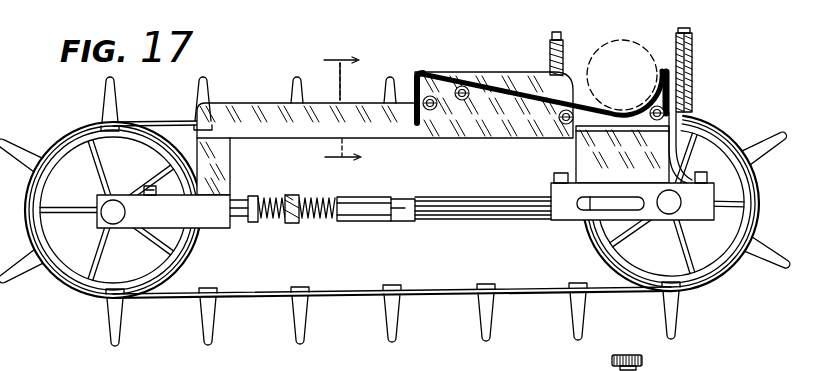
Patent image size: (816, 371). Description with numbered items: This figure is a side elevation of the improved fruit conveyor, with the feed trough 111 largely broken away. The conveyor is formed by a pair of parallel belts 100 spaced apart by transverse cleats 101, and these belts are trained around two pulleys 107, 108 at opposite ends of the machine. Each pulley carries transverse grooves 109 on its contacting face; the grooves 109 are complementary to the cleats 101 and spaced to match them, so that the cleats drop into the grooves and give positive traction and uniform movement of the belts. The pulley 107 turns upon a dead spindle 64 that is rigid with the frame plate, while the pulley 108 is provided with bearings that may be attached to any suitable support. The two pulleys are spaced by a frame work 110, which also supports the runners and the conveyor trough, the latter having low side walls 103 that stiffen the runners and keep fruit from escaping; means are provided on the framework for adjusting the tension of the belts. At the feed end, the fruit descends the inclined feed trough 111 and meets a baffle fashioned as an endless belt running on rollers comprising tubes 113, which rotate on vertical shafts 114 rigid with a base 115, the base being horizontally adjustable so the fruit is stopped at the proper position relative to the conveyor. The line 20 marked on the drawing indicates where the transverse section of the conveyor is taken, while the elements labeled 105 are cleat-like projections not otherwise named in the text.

The section line 20— 20 is at (329, 110).
The dead spindle 64 is at (125, 212).
The parallel belts 100 is at (433, 290).
The transverse cleats 101 is at (392, 286).
The side walls 103 is at (248, 102).
The cleats / spikes 105 is at (199, 90).
The pulley 107 is at (67, 272).
The pulley 108 is at (637, 272).
The transverse grooves 109 is at (190, 250).
The frame work 110 is at (316, 195).
The feed trough 111 is at (540, 104).
The tubes 113 is at (549, 55).
The vertical shafts 114 is at (662, 33).
The base 115 is at (646, 366).